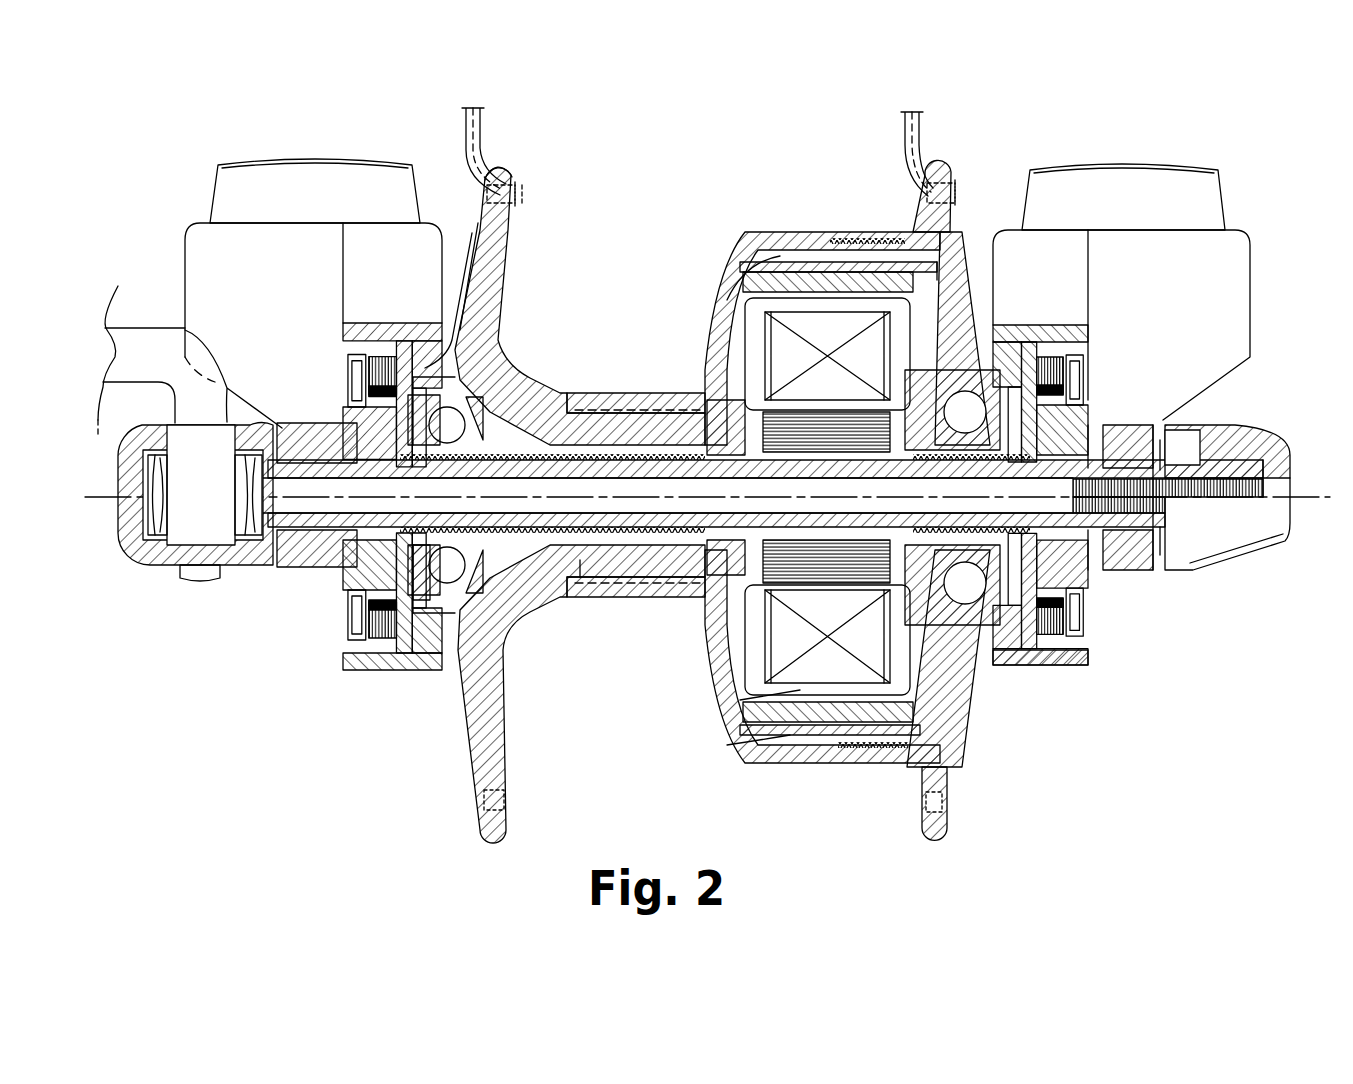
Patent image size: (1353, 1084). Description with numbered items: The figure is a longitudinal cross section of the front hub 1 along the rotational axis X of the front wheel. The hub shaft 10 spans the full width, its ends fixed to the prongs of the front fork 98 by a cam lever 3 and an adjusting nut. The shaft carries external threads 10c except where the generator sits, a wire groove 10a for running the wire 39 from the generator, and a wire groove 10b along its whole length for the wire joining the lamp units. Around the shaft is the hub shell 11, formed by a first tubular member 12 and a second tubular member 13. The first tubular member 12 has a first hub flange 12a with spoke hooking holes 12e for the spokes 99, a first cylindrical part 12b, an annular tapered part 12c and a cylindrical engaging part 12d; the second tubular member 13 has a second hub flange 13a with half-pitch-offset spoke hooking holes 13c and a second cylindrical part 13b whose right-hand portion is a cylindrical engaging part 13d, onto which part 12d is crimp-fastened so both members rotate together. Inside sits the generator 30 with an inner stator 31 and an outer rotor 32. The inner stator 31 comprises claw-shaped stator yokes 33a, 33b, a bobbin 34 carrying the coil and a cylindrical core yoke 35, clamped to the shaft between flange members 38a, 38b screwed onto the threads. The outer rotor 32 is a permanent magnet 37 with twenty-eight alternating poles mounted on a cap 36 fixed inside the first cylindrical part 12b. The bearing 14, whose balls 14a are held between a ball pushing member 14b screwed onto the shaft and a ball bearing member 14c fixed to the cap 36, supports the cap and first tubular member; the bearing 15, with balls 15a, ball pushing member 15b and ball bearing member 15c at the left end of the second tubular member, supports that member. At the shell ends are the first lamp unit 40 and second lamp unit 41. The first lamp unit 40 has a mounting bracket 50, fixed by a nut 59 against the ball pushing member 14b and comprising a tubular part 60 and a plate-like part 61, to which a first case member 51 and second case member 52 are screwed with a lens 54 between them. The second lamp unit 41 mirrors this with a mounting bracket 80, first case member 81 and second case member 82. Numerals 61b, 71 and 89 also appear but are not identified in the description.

The front hub 1 is at (655, 185).
The cam lever 3 is at (198, 522).
The hub shaft 10 is at (667, 548).
The wire groove 10a is at (722, 330).
The wire groove 10b is at (718, 590).
The external threads 10c is at (598, 602).
The hub shell 11 is at (540, 292).
The first tubular member 12 is at (620, 398).
The first hub flange 12a is at (953, 170).
The first cylindrical part 12b is at (748, 236).
The annular tapered part 12c is at (726, 252).
The cylindrical engaging part 12d is at (648, 398).
The spoke hooking holes 12e is at (922, 197).
The second tubular member 13 is at (520, 378).
The second hub flange 13a is at (514, 172).
The second cylindrical part 13b is at (548, 575).
The spoke hooking holes 13c is at (526, 205).
The cylindrical engaging part 13d is at (622, 603).
The bearing 14 is at (968, 620).
The balls 14a is at (1000, 670).
The ball pushing member 14b is at (1082, 668).
The ball bearing member 14c is at (958, 748).
The bearing 15 is at (447, 620).
The balls 15a is at (386, 600).
The ball pushing member 15b is at (347, 615).
The ball bearing member 15c is at (470, 730).
The generator 30 is at (820, 330).
The inner stator 31 is at (760, 748).
The outer rotor 32 is at (828, 700).
The stator yoke 33a is at (782, 712).
The stator yoke 33b is at (888, 745).
The bobbin 34 is at (795, 738).
The cylindrical core yoke 35 is at (752, 690).
The cap 36 is at (962, 246).
The permanent magnet 37 is at (745, 740).
The flange member 38a is at (708, 345).
The flange member 38b is at (985, 280).
The wire 39 is at (1165, 428).
The first lamp unit 40 is at (1212, 276).
The second lamp unit 41 is at (215, 300).
The mounting bracket 50 is at (1062, 665).
The first case member 51 is at (1060, 330).
The second case member 52 is at (1225, 238).
The lens 54 is at (333, 172).
The nut 59 is at (1100, 572).
The tubular part 60 is at (1086, 403).
The plate-like part 61 is at (1036, 340).
The lock ring projection 61b is at (1066, 366).
The spring pin 71 is at (1068, 378).
The mounting bracket 80 is at (437, 300).
The first case member 81 is at (370, 330).
The second case member 82 is at (200, 235).
The left lower bearing housing 89 is at (340, 565).
The front fork 98 is at (302, 566).
The spokes 99 is at (485, 150).
The axis X is at (1298, 490).